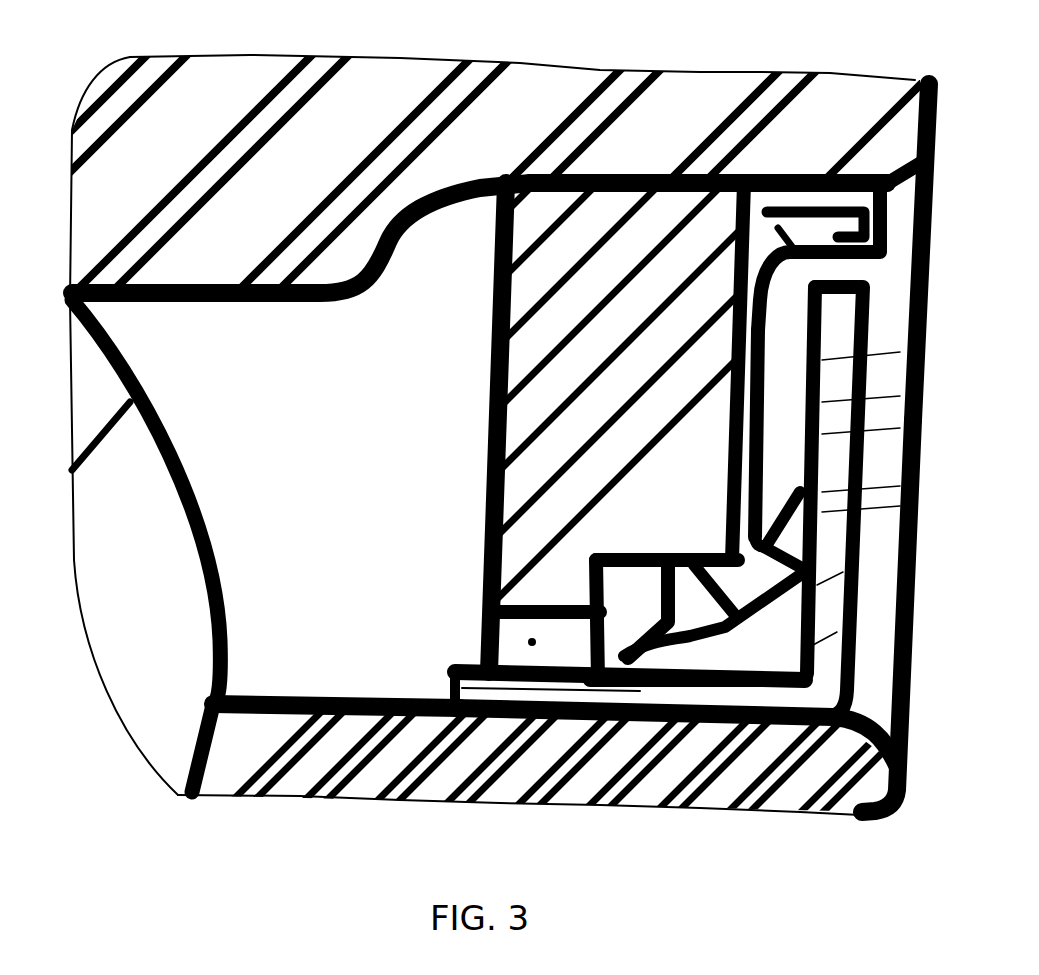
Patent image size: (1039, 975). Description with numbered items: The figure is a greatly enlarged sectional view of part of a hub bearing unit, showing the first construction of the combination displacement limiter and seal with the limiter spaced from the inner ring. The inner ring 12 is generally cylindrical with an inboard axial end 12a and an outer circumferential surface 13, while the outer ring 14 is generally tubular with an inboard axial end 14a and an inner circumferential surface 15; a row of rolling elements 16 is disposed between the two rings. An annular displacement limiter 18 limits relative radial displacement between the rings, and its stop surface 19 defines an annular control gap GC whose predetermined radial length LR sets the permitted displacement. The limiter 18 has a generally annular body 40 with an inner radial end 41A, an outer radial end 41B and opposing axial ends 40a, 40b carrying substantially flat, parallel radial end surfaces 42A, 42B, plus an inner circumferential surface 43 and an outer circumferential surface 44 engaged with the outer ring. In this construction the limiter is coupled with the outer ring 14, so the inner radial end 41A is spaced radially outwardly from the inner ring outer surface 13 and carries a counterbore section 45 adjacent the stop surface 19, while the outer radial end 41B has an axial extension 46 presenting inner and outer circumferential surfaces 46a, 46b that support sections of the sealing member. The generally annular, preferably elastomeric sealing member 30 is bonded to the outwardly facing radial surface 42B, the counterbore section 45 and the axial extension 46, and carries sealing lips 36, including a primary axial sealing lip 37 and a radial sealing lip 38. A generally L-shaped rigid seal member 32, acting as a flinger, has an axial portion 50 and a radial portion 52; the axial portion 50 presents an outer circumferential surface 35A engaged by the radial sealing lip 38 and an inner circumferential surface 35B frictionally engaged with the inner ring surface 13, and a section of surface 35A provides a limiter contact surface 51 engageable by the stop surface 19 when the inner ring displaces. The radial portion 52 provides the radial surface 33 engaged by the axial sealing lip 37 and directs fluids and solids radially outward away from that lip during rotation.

The inner ring 12 is at (658, 802).
The inboard axial end 12a is at (915, 796).
The outer circumferential surface 13 is at (294, 700).
The outer ring 14 is at (550, 92).
The inboard axial end 14a is at (915, 120).
The inner circumferential surface 15 is at (294, 300).
The rolling elements 16 is at (150, 521).
The displacement limiter 18 is at (440, 403).
The stop surface 19 is at (548, 630).
The sealing member 30 is at (792, 362).
The rigid seal member 32 is at (874, 543).
The radial surface 33 is at (826, 436).
The outer circumferential surface 35A is at (745, 665).
The inner circumferential surface 35B is at (790, 700).
The sealing lip 36 is at (690, 668).
The axial sealing lip 37 is at (800, 498).
The radial sealing lip 38 is at (695, 660).
The annular body 40 is at (492, 347).
The axial end 40a is at (488, 440).
The axial end 40b is at (764, 403).
The inner radial end 41A is at (500, 690).
The outer radial end 41B is at (683, 180).
The radial end surface 42A is at (488, 466).
The radial end surface 42B is at (745, 371).
The inner circumferential surface 43 is at (563, 640).
The outer circumferential surface 44 is at (644, 176).
The counterbore section 45 is at (632, 560).
The axial extension 46 is at (815, 180).
The inner circumferential surface 46a is at (890, 228).
The outer circumferential surface 46b is at (855, 176).
The axial portion 50 is at (598, 700).
The limiter contact surface 51 is at (532, 650).
The radial portion 52 is at (848, 400).
The control gap GC is at (512, 600).
The radial length LR is at (455, 664).